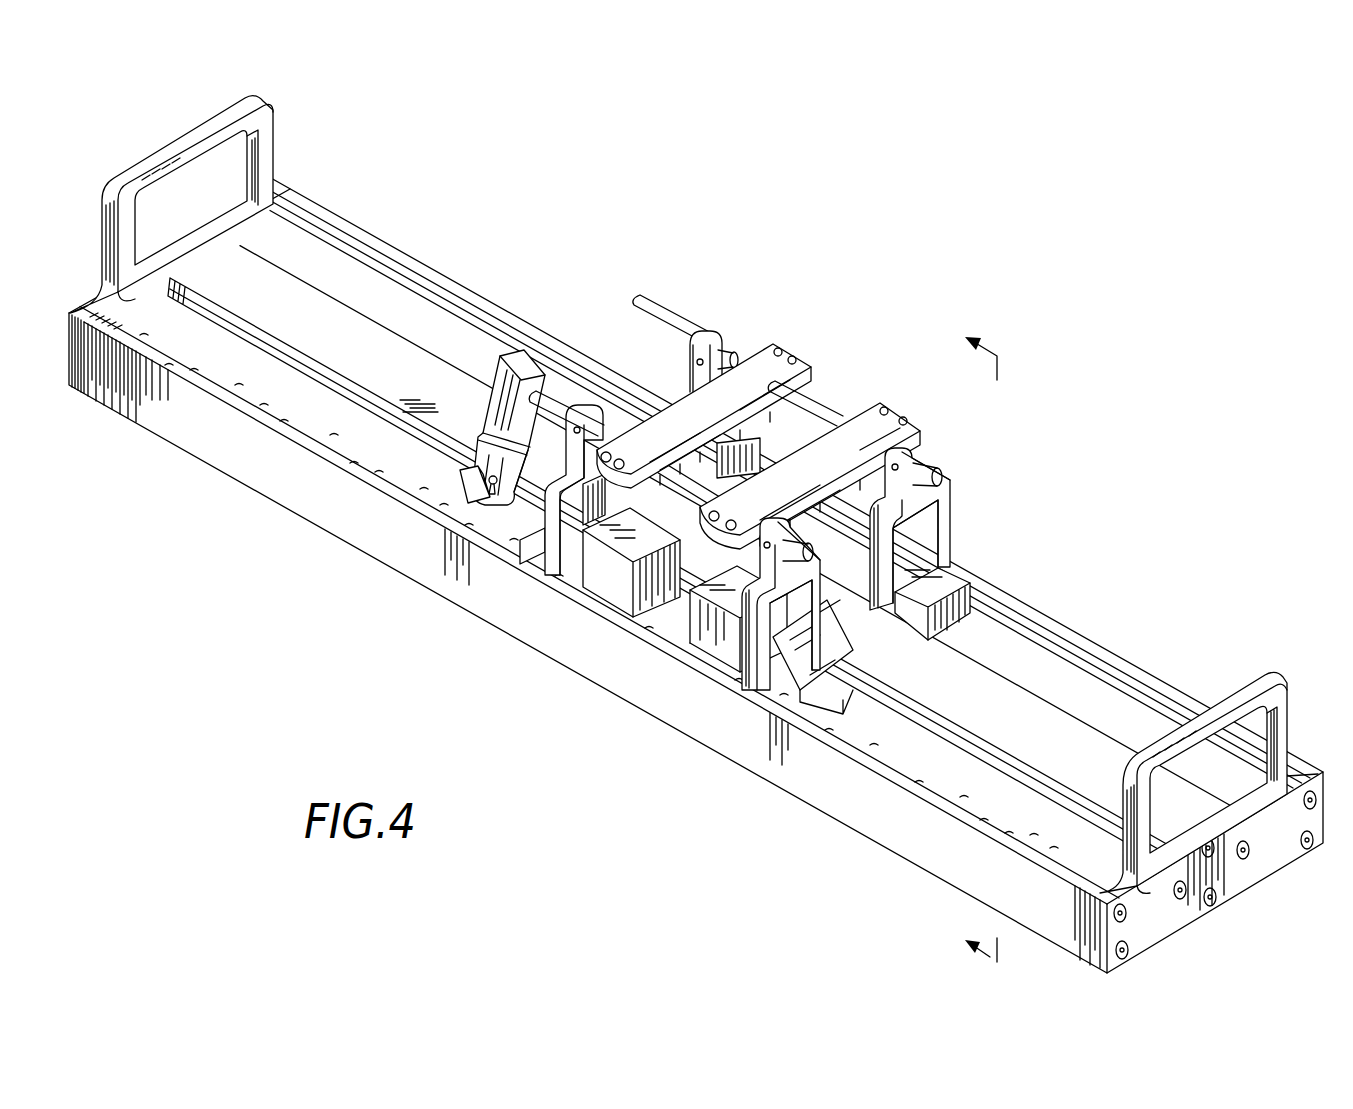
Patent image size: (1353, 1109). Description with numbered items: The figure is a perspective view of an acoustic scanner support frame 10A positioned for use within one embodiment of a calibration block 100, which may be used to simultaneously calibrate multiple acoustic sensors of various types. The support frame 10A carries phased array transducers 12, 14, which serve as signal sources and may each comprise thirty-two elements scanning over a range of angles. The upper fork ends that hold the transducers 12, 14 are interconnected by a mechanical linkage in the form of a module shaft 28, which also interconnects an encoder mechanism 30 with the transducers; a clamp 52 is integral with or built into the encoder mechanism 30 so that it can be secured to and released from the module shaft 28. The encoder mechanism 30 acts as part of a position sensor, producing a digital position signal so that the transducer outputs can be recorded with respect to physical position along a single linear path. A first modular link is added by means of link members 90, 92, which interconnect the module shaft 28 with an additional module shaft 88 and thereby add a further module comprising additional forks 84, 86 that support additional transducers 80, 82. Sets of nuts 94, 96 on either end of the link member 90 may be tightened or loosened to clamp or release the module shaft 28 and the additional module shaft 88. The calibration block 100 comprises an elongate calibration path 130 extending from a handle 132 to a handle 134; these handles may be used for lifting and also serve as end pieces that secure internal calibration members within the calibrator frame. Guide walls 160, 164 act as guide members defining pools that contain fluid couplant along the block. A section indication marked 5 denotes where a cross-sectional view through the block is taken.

The support frame 10A is at (832, 380).
The phased array transducer 12 is at (640, 545).
The phased array transducer 14 is at (718, 645).
The module shaft 28 is at (630, 495).
The encoder mechanism 30 is at (458, 476).
The clamp 52 is at (502, 365).
The additional transducer 80 is at (948, 580).
The additional transducer 82 is at (738, 470).
The additional fork 84 is at (950, 512).
The additional fork 86 is at (690, 412).
The additional module shaft 88 is at (848, 408).
The link member 90 is at (830, 455).
The link member 92 is at (655, 428).
The set of nuts 94 is at (705, 540).
The set of nuts 96 is at (905, 415).
The calibration block 100 is at (1102, 602).
The elongate calibration path 130 is at (895, 742).
The handle 132 is at (272, 128).
The handle 134 is at (1282, 686).
The guide wall 160 is at (287, 347).
The guide wall 164 is at (362, 248).
The section line 5- 5 is at (968, 637).